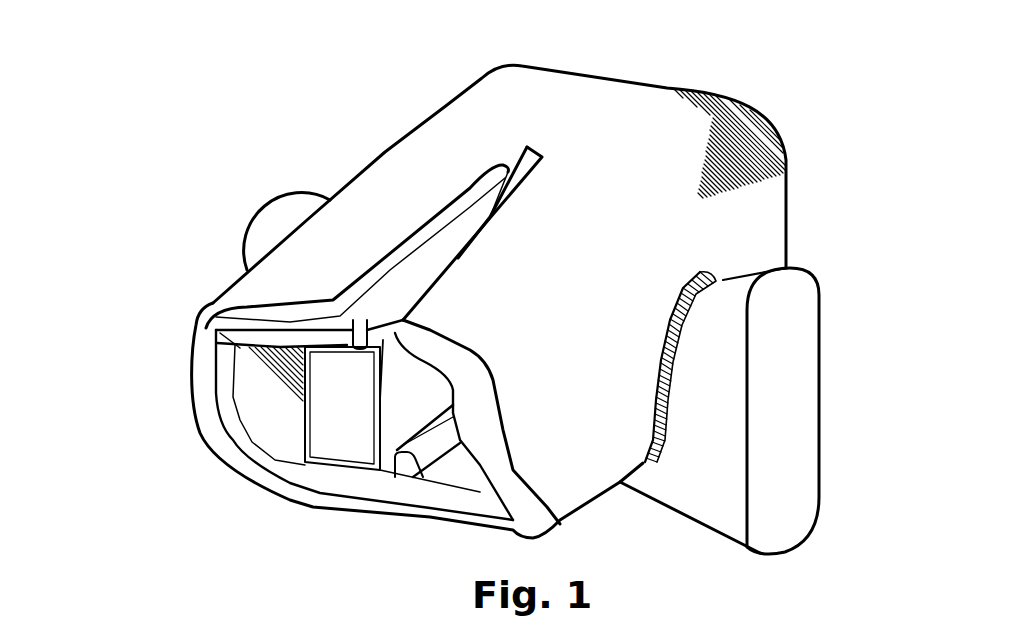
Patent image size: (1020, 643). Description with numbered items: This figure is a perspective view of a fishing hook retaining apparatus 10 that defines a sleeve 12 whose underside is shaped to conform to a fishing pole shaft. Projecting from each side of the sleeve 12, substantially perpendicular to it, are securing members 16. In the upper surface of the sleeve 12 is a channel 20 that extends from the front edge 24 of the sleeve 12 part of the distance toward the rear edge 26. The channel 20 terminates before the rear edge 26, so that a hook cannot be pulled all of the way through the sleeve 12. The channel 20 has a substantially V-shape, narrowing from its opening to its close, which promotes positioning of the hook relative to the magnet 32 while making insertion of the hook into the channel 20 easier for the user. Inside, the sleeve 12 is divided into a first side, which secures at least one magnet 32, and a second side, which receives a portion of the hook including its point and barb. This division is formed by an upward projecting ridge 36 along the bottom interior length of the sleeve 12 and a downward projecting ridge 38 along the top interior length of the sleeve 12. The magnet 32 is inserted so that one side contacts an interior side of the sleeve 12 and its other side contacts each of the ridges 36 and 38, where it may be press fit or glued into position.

The fishing hook retaining apparatus 10 is at (291, 104).
The sleeve 12 is at (380, 183).
The securing members 16 is at (282, 215).
The channel 20 is at (388, 348).
The front edge 24 is at (235, 342).
The rear edge 26 is at (658, 84).
The magnet 32 is at (335, 418).
The upward projecting ridge 36 is at (403, 462).
The downward projecting ridge 38 is at (400, 340).